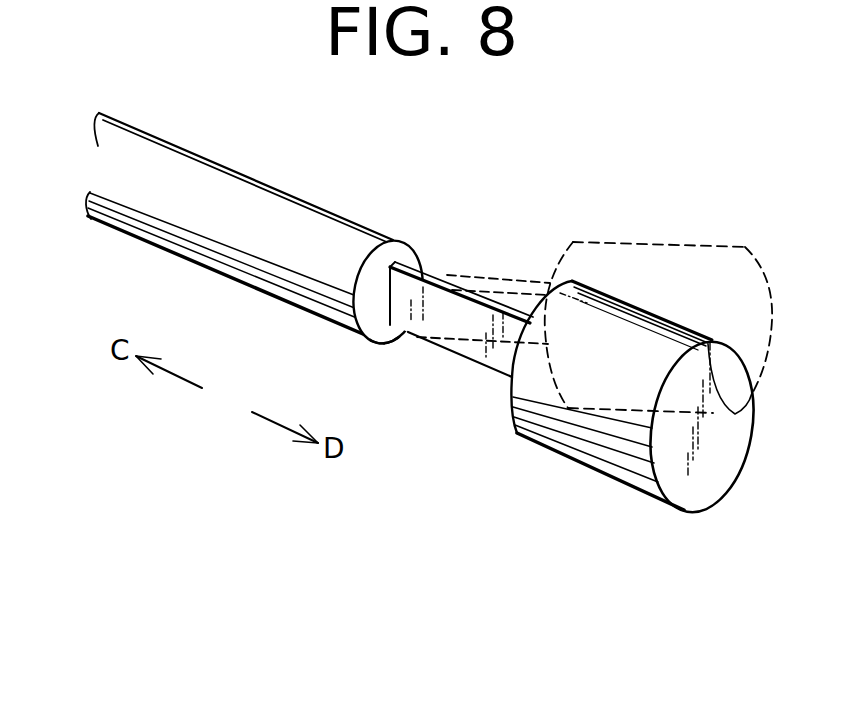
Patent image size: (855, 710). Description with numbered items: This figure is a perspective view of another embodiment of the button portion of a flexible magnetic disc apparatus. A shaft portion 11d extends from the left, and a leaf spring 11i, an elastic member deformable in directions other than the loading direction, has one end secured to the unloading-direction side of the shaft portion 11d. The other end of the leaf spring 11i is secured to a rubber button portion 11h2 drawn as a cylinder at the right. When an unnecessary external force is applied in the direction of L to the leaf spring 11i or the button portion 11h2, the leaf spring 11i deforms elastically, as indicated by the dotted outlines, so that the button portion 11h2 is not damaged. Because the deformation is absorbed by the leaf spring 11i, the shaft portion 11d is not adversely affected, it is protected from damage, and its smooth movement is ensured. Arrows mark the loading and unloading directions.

The shaft portion 11d is at (272, 230).
The leaf spring 11i is at (437, 310).
The cylindrical portion 11h2 is at (625, 450).
The direction of external force L is at (576, 434).